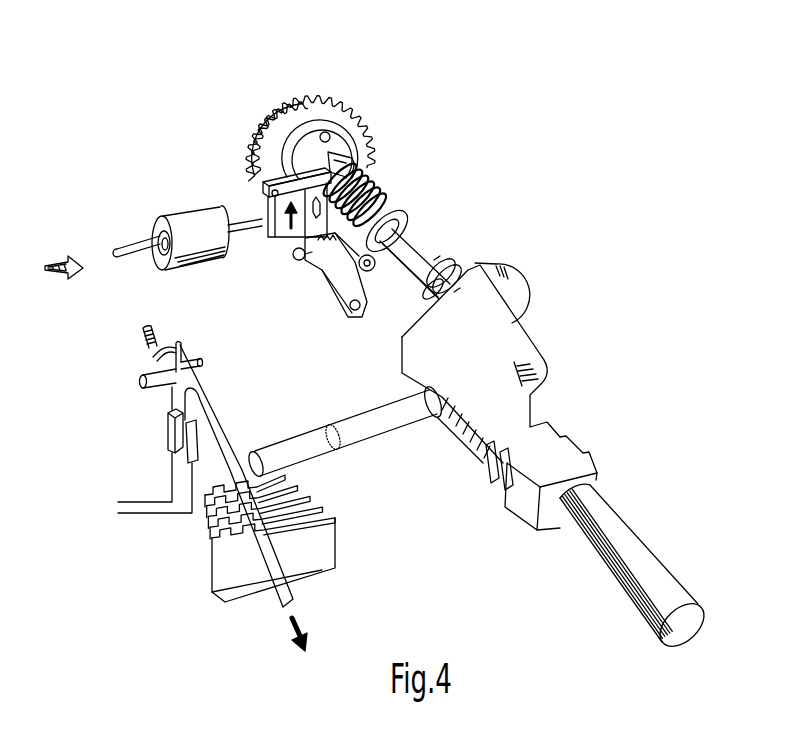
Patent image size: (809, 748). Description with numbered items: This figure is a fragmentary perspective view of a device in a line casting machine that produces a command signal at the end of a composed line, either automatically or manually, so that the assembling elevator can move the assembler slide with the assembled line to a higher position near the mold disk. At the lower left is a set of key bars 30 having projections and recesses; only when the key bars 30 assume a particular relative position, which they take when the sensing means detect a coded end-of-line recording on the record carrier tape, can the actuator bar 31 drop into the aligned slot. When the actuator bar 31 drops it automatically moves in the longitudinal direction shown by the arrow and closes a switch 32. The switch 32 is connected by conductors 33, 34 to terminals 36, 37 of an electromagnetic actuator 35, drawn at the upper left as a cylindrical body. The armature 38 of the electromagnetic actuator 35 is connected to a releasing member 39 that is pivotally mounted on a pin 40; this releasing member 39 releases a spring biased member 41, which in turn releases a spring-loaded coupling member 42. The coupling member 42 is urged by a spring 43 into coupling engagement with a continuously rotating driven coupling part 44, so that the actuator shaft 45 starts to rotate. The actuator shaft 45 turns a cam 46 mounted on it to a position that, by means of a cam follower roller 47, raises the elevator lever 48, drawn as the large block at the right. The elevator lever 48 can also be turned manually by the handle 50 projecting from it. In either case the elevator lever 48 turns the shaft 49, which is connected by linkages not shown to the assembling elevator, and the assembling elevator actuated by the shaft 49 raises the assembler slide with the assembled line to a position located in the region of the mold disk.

The key bars 30 is at (203, 549).
The actuator bar 31 is at (207, 403).
The switch 32 is at (167, 437).
The conductor 33 is at (118, 502).
The conductor 34 is at (118, 513).
The electromagnetic actuator 35 is at (195, 218).
The terminal 36 is at (165, 250).
The terminal 37 is at (163, 265).
The armature 38 is at (140, 245).
The releasing member 39 is at (257, 137).
The pin 40 is at (260, 182).
The spring biased member 41 is at (310, 225).
The spring-loaded coupling member 42 is at (342, 167).
The spring 43 is at (380, 193).
The driven coupling part 44 is at (316, 152).
The actuator shaft 45 is at (412, 260).
The cam 46 is at (517, 292).
The cam follower roller 47 is at (447, 257).
The elevator lever 48 is at (493, 345).
The shaft 49 is at (417, 410).
The handle 50 is at (617, 532).